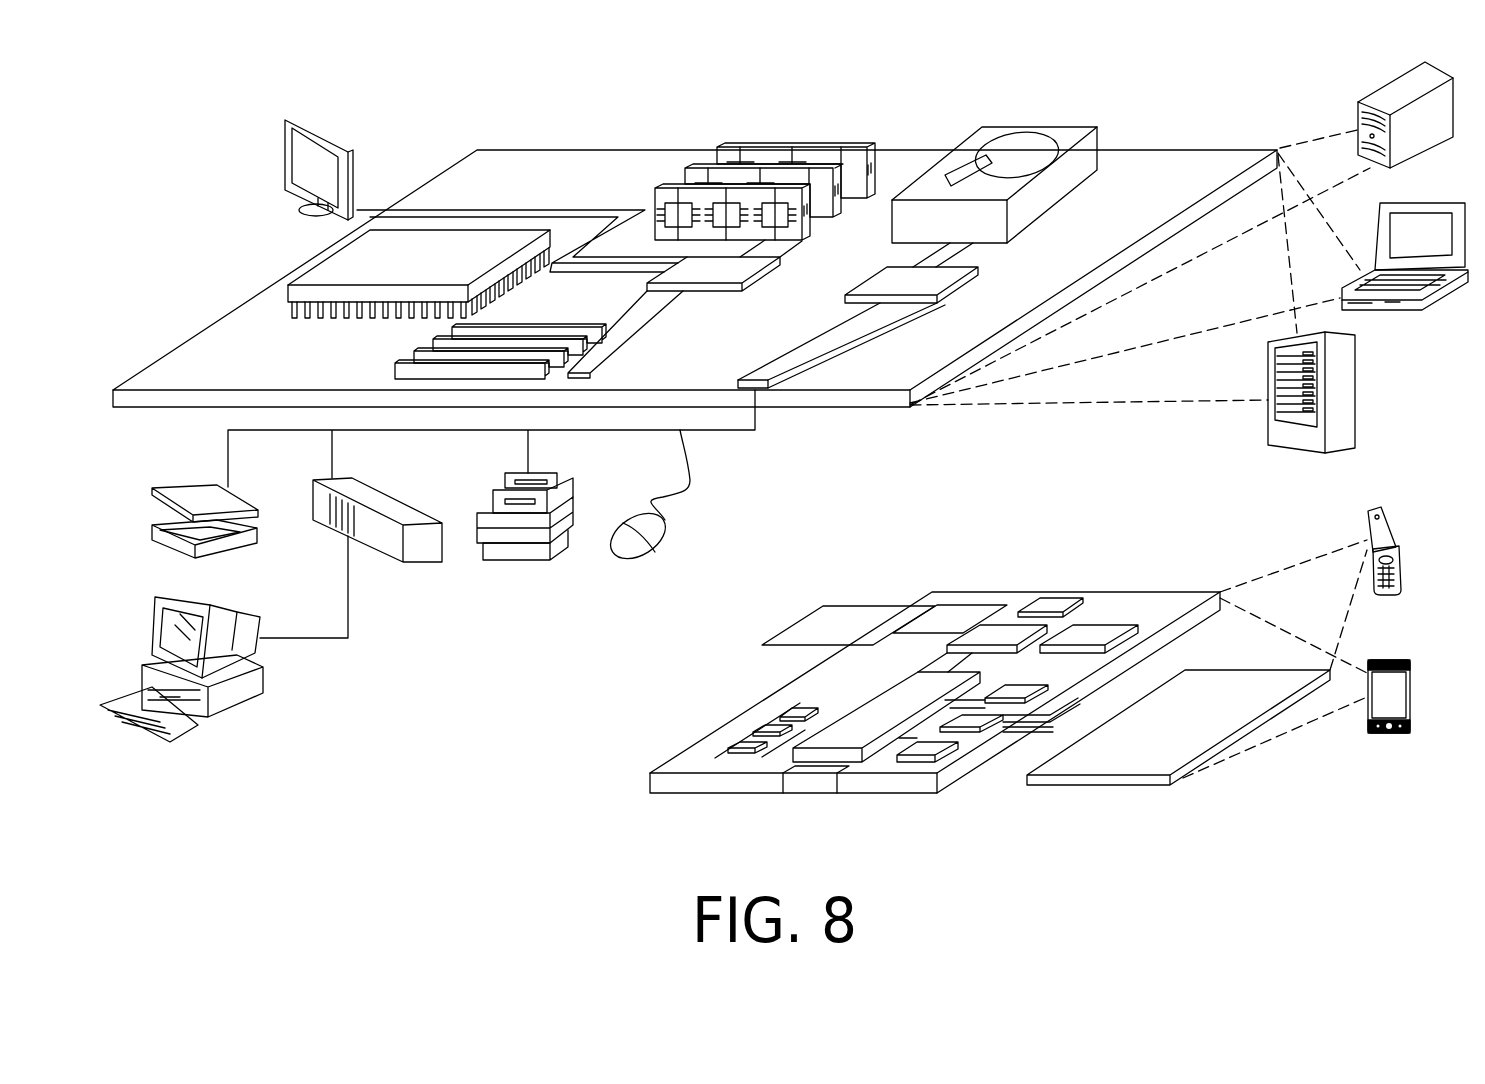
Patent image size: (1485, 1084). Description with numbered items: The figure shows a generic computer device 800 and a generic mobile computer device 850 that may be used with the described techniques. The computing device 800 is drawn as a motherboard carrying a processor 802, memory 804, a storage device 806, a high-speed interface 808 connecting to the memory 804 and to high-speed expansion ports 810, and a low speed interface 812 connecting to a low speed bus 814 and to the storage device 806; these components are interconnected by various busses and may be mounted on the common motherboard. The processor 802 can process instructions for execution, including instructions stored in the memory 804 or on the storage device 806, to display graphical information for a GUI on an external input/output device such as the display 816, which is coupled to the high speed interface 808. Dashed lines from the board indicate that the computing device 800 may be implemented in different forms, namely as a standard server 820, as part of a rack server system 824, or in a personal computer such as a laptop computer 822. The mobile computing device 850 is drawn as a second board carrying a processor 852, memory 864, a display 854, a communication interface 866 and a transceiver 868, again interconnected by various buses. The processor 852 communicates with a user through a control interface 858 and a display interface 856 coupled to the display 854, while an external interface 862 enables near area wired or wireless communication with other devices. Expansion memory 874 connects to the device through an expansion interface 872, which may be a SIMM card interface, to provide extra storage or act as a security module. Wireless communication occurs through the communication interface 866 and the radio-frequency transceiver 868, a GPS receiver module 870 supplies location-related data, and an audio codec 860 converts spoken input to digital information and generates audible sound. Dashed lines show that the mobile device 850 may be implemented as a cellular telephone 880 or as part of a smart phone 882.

The computing device 800 is at (431, 101).
The processor 802 is at (313, 262).
The memory 804 is at (800, 142).
The storage device 806 is at (1052, 125).
The high-speed interface 808 is at (727, 267).
The high-speed expansion ports 810 is at (425, 347).
The low speed interface 812 is at (883, 273).
The low speed bus 814 is at (758, 373).
The display 816 is at (288, 118).
The standard server 820 is at (1382, 95).
The laptop computer 822 is at (1440, 203).
The rack server system 824 is at (1357, 390).
The mobile computing device 850 is at (609, 799).
The processor 852 is at (853, 722).
The display 854 is at (1222, 687).
The display interface 856 is at (937, 748).
The control interface 858 is at (980, 720).
The audio codec 860 is at (1020, 687).
The external interface 862 is at (810, 777).
The memory 864 is at (760, 727).
The communication interface 866 is at (997, 628).
The transceiver 868 is at (1095, 630).
The GPS receiver module 870 is at (1052, 603).
The expansion interface 872 is at (915, 605).
The expansion memory 874 is at (825, 605).
The cellular telephone 880 is at (1380, 512).
The smart phone 882 is at (1378, 660).